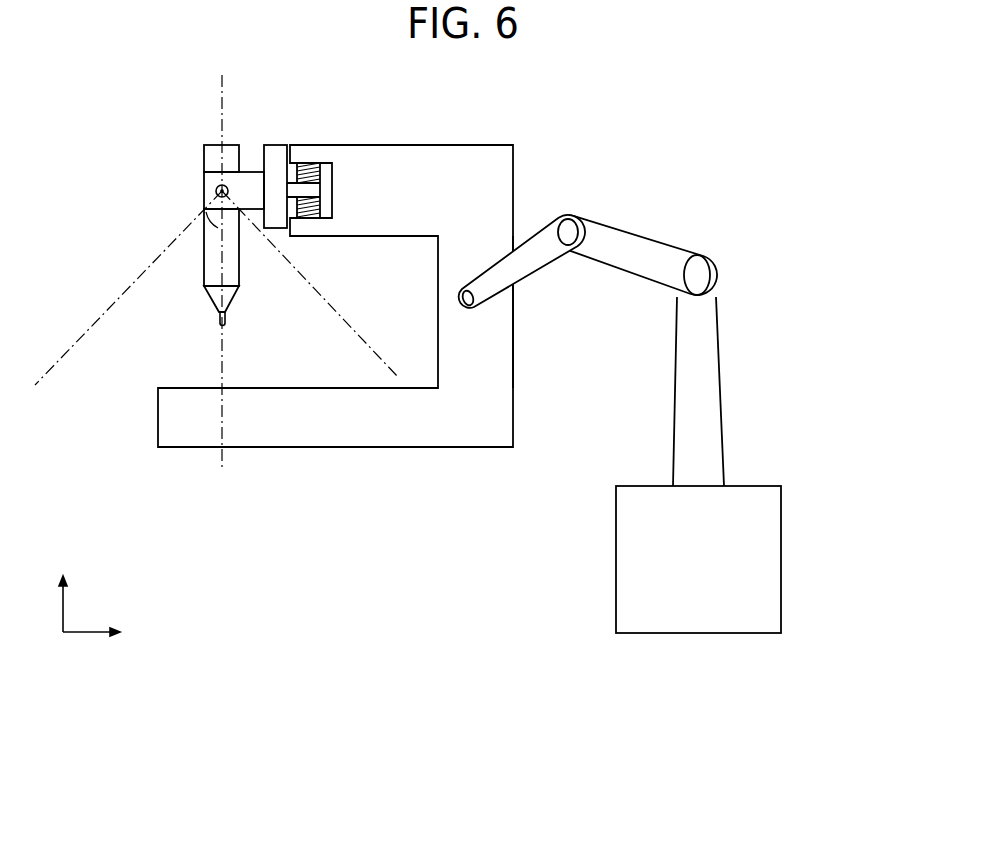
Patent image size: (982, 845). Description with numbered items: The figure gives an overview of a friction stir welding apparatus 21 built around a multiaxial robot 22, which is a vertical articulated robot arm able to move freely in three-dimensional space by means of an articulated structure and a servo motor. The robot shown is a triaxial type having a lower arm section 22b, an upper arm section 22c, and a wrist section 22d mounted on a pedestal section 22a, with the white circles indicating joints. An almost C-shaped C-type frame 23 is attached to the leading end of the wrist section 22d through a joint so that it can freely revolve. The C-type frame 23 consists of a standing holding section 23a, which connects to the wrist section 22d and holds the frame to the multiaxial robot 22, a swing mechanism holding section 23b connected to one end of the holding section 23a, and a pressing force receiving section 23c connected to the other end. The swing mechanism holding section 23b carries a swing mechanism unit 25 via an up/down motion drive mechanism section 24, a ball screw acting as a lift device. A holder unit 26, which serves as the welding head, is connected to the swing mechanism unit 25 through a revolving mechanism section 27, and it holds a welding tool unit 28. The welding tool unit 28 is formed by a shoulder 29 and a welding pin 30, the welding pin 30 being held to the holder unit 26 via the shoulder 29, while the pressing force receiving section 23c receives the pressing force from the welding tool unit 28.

The friction stir welding apparatus 21 is at (473, 563).
The multiaxial robot 22 is at (740, 296).
The pedestal section 22a is at (773, 537).
The lower arm section 22b is at (713, 395).
The upper arm section 22c is at (647, 238).
The wrist section 22d is at (533, 263).
The C-type frame 23 is at (527, 152).
The holding section 23a is at (503, 197).
The swing mechanism holding section 23b is at (393, 157).
The pressing force receiving section 23c is at (330, 440).
The up/down motion drive mechanism section 24 is at (308, 167).
The swing mechanism unit 25 is at (250, 180).
The holder unit 26 is at (210, 158).
The revolving mechanism section 27 is at (216, 190).
The welding tool unit 28 is at (150, 285).
The shoulder 29 is at (212, 295).
The welding pin 30 is at (220, 315).